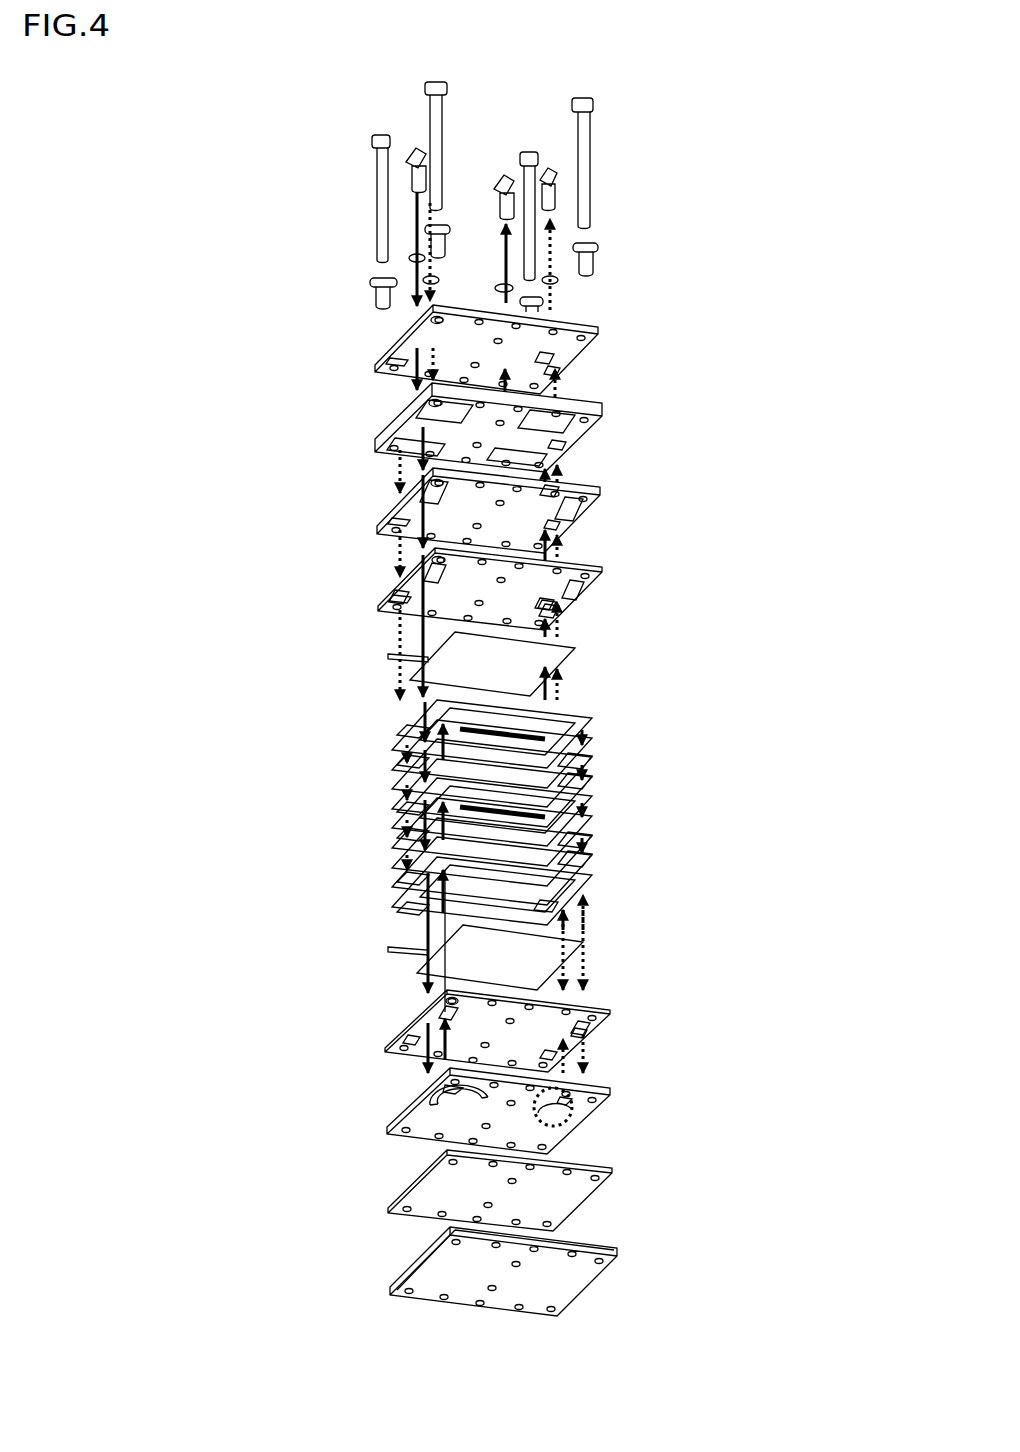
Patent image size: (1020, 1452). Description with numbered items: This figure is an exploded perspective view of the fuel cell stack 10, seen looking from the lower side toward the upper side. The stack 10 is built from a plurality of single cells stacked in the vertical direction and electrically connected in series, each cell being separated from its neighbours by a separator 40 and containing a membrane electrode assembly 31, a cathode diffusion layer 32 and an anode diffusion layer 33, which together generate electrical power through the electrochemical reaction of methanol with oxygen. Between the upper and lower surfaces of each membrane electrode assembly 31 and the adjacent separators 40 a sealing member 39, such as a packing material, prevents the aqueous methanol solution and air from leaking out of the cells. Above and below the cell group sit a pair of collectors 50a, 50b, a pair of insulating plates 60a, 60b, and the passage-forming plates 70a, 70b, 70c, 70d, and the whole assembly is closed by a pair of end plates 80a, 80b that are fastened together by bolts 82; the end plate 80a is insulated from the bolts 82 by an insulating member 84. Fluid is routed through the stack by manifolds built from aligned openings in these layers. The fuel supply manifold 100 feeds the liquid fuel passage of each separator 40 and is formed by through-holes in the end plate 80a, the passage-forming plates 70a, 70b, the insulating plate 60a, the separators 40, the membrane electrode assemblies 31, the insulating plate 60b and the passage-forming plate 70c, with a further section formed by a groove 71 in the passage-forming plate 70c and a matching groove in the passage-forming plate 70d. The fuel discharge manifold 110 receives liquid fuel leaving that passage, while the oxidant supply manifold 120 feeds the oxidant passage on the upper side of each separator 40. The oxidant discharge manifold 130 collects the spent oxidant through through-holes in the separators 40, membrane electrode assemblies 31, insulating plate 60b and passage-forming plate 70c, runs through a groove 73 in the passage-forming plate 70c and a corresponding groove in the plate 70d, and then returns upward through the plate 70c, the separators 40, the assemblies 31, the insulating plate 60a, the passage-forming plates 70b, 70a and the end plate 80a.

The fuel cell stack 10 is at (515, 1363).
The membrane electrode assembly 31 is at (590, 746).
The cathode diffusion layer 32 is at (590, 727).
The anode diffusion layer 33 is at (590, 762).
The sealing member 39 is at (400, 729).
The separator 40 is at (590, 706).
The collector 50a is at (578, 648).
The collector 50b is at (585, 942).
The insulating plate 60a is at (597, 572).
The insulating plate 60b is at (602, 1028).
The passage-forming plate 70a is at (595, 413).
The passage-forming plate 70b is at (592, 494).
The passage-forming plate 70c is at (608, 1103).
The passage-forming plate 70d is at (608, 1173).
The groove 71 is at (430, 1105).
The groove 73 is at (568, 1120).
The end plate 80a is at (590, 333).
The end plate 80b is at (610, 1260).
The bolt 82 is at (590, 158).
The insulating member 84 is at (598, 262).
The fuel supply manifold 100 is at (425, 330).
The fuel discharge manifold 110 is at (548, 358).
The oxidant supply manifold 120 is at (392, 363).
The oxidant discharge manifold 130 is at (562, 370).